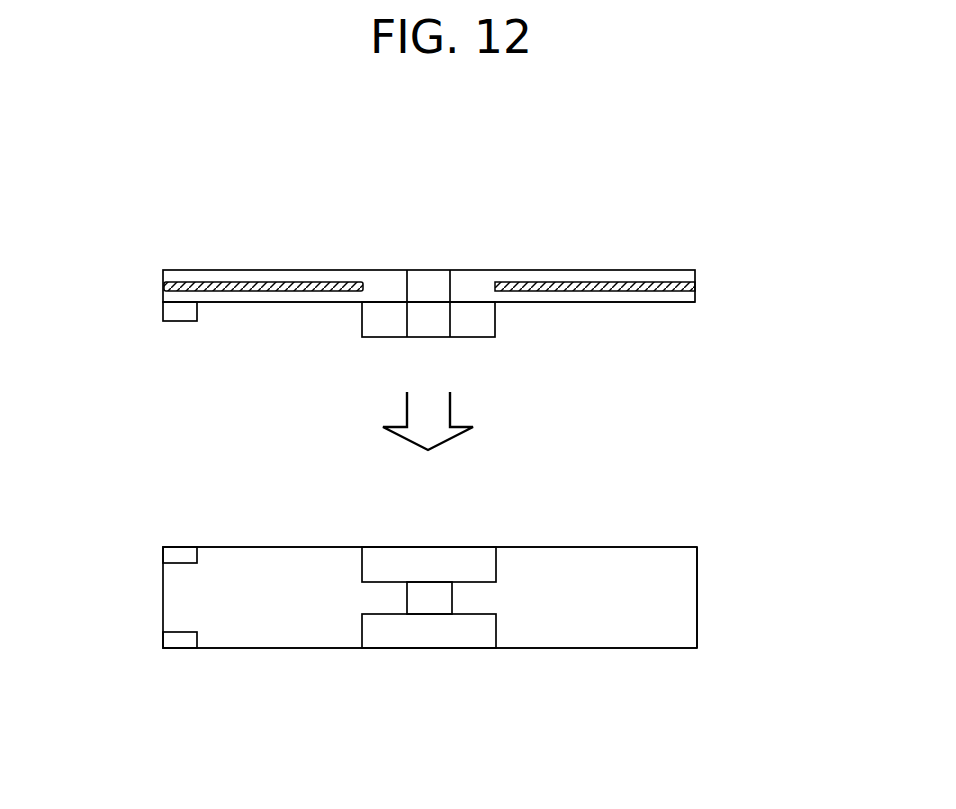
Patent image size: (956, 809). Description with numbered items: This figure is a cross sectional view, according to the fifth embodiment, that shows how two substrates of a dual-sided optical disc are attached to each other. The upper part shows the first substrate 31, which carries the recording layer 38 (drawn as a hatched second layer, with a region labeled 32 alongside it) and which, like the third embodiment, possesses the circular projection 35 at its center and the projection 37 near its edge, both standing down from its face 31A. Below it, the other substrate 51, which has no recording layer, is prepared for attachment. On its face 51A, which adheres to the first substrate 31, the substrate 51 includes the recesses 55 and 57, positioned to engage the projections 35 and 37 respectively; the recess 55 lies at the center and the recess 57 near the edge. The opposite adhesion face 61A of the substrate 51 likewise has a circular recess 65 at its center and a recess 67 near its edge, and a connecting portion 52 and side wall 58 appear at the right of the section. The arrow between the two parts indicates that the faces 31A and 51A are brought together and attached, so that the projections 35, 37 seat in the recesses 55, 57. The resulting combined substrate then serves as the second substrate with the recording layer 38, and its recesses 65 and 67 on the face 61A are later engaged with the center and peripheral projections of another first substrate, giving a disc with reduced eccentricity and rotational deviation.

The first substrate 31 is at (219, 224).
The first electrode layer 32 is at (695, 271).
The recording layer 38 is at (695, 287).
The projection 37 is at (163, 312).
The circular projection 35 is at (361, 319).
The face 31A is at (673, 303).
The substrate 51 is at (194, 699).
The recess 57 is at (170, 553).
The recess 67 is at (170, 637).
The recess 55 is at (382, 555).
The circular recess 65 is at (385, 637).
The connecting portion 52 is at (697, 605).
The side wall 58 is at (688, 575).
The face 51A is at (665, 547).
The adhesion face 61A is at (665, 650).